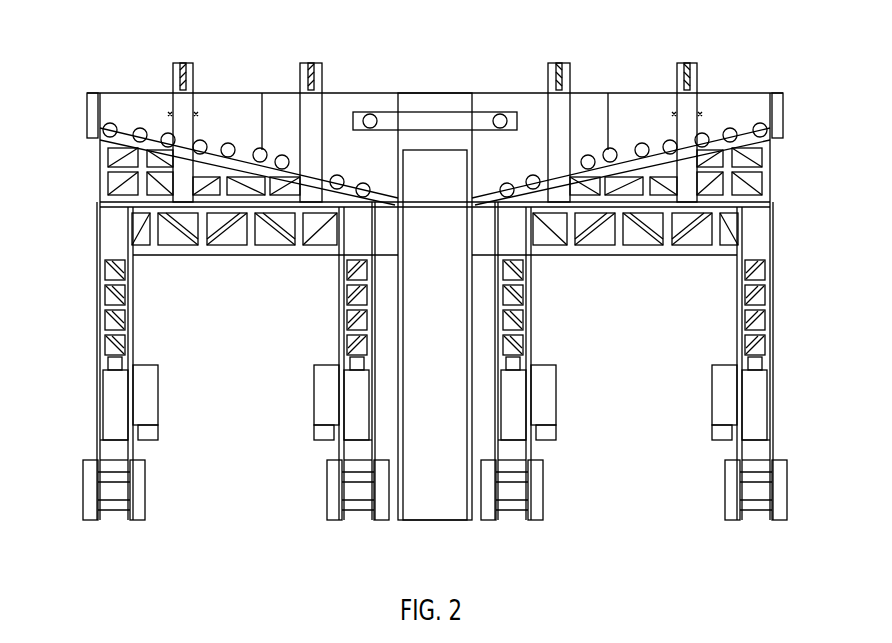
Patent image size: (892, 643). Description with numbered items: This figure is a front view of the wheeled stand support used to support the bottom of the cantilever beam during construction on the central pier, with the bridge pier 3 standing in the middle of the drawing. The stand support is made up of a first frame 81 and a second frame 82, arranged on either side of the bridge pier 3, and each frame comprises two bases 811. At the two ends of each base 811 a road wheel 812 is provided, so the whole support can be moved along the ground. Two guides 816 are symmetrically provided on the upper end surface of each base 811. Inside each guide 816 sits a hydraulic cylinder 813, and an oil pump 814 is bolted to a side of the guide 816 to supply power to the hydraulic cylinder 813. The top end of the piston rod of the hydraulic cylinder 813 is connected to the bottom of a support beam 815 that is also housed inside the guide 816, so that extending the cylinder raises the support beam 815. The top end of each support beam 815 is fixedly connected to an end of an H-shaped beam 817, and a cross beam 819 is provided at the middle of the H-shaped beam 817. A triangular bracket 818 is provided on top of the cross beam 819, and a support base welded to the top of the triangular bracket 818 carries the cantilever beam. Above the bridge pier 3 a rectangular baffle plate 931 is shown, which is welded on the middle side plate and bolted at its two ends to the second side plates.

The bridge pier 3 is at (455, 473).
The first frame 81 is at (100, 205).
The second frame 82 is at (780, 240).
The base 811 is at (113, 462).
The road wheel 812 is at (83, 508).
The hydraulic cylinder 813 is at (110, 398).
The oil pump 814 is at (143, 377).
The support beam 815 is at (100, 337).
The guide 816 is at (92, 283).
The H-shaped beam 817 is at (117, 242).
The triangular bracket 818 is at (100, 162).
The cross beam 819 is at (235, 257).
The rectangular baffle plate 931 is at (437, 120).